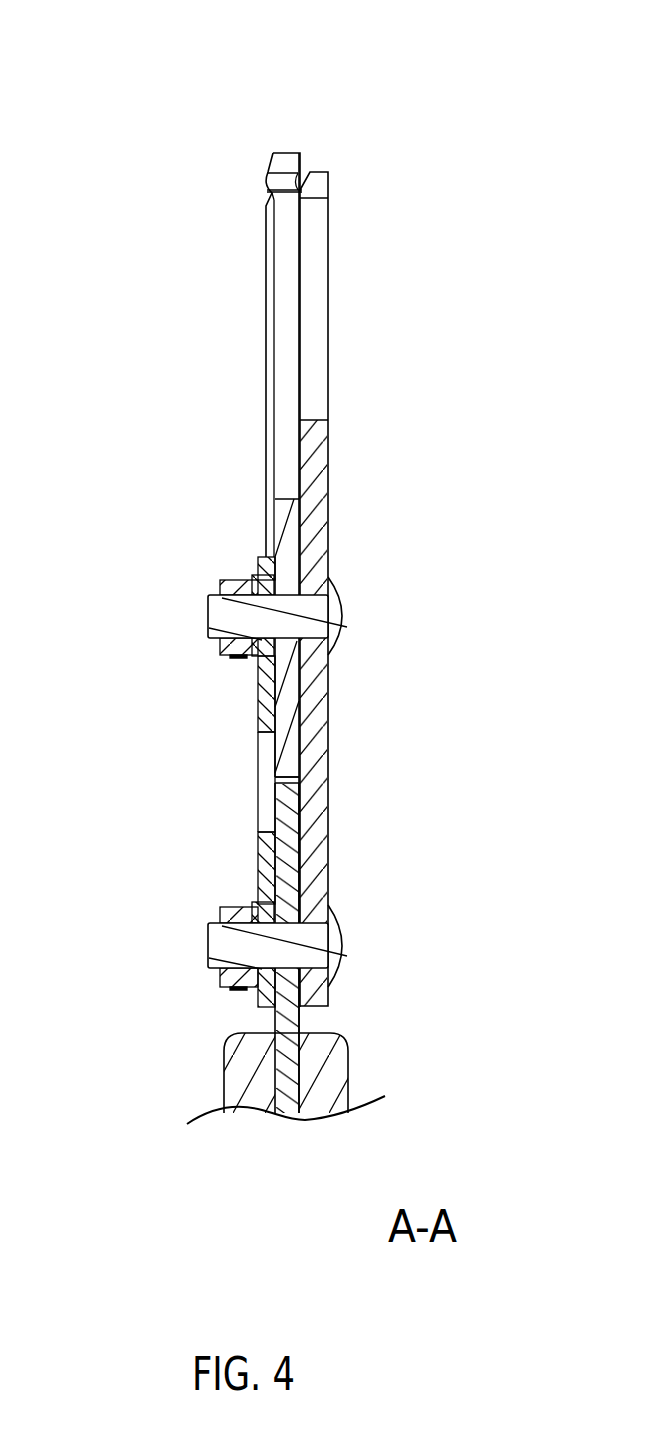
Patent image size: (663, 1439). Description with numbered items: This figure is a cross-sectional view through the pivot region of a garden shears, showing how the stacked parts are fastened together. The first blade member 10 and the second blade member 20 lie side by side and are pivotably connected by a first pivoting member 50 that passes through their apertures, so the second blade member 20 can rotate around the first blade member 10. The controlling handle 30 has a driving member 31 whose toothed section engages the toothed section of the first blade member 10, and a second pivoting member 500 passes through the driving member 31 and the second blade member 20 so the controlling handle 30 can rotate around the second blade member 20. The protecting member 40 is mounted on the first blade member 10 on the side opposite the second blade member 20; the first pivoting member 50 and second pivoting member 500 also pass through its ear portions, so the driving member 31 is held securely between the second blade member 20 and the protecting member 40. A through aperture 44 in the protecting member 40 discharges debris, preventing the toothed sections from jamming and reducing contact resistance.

The first blade member 10 is at (275, 148).
The second blade member 20 is at (333, 355).
The driving member 31 is at (290, 870).
The protecting member 40 is at (257, 703).
The through aperture 44 is at (263, 792).
The first pivoting member 50 is at (211, 601).
The second pivoting member 500 is at (216, 955).
The controlling handle 30 is at (352, 1073).